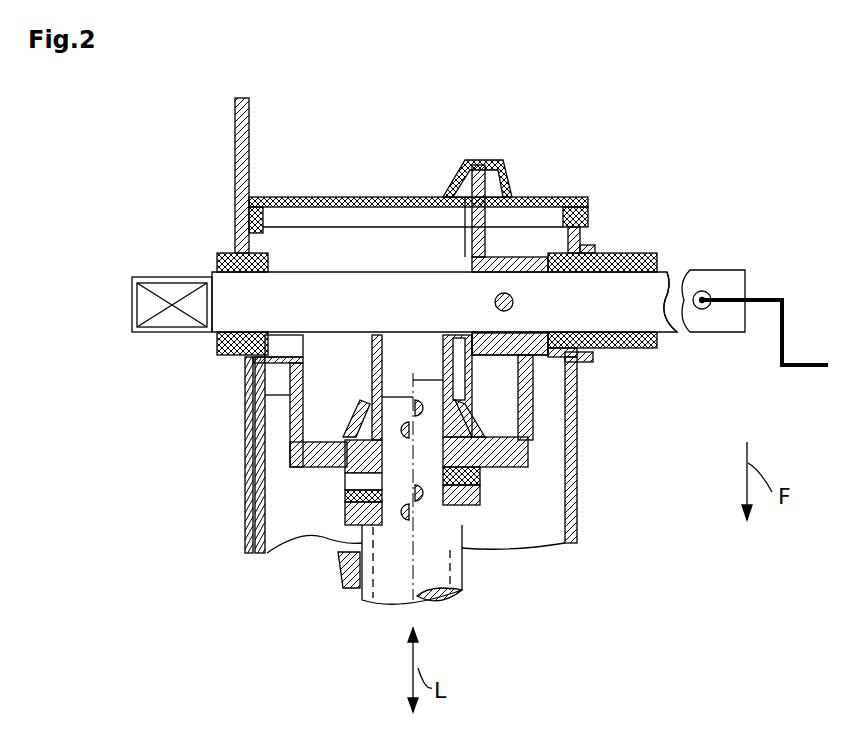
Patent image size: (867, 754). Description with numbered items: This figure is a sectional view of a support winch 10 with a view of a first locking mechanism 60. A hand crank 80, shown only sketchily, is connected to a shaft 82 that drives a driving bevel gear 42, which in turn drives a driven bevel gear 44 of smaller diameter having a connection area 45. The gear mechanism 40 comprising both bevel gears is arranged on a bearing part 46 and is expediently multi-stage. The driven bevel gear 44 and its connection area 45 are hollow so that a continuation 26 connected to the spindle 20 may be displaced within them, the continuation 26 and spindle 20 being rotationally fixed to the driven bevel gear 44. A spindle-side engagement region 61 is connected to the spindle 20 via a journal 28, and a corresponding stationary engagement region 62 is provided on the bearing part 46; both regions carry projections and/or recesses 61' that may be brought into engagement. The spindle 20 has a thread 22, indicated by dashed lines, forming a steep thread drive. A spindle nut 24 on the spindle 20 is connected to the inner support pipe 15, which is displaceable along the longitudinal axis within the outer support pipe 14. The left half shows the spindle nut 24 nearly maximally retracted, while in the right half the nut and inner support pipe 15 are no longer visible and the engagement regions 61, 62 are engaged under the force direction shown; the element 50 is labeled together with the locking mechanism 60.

The support winch 10 is at (635, 173).
The outer support pipe 14 is at (247, 520).
The inner support pipe 15 is at (260, 548).
The spindle 20 is at (395, 590).
The thread 22 is at (360, 598).
The spindle nut 24 is at (338, 572).
The continuation 26 is at (395, 412).
The journal 28 is at (420, 490).
The gear mechanism 40 is at (507, 393).
The driving bevel gear 42 is at (505, 160).
The driven bevel gear 44 is at (345, 430).
The connection area 45 is at (383, 373).
The bearing part 46 is at (535, 455).
The bearing plate 50 is at (503, 495).
The first locking mechanism 60 is at (513, 546).
The spindle-side engagement region 61 is at (171, 455).
The projections and/or recesses 61' is at (487, 551).
The stationary engagement region 62 is at (370, 480).
The hand crank 80 is at (768, 297).
The shaft 82 is at (297, 293).